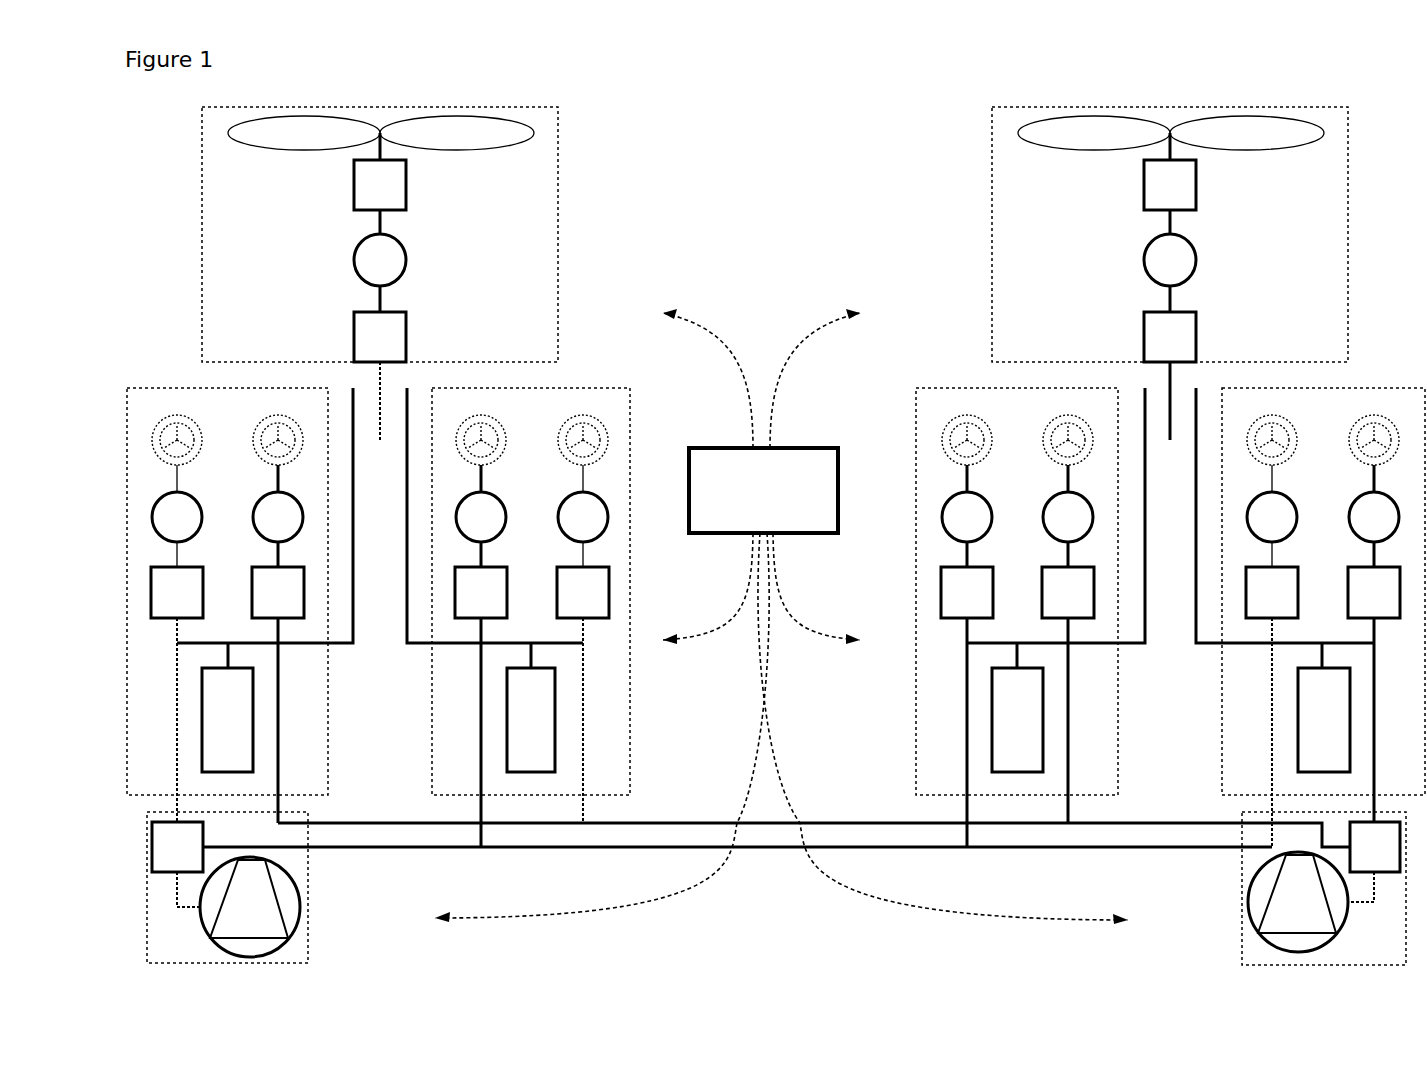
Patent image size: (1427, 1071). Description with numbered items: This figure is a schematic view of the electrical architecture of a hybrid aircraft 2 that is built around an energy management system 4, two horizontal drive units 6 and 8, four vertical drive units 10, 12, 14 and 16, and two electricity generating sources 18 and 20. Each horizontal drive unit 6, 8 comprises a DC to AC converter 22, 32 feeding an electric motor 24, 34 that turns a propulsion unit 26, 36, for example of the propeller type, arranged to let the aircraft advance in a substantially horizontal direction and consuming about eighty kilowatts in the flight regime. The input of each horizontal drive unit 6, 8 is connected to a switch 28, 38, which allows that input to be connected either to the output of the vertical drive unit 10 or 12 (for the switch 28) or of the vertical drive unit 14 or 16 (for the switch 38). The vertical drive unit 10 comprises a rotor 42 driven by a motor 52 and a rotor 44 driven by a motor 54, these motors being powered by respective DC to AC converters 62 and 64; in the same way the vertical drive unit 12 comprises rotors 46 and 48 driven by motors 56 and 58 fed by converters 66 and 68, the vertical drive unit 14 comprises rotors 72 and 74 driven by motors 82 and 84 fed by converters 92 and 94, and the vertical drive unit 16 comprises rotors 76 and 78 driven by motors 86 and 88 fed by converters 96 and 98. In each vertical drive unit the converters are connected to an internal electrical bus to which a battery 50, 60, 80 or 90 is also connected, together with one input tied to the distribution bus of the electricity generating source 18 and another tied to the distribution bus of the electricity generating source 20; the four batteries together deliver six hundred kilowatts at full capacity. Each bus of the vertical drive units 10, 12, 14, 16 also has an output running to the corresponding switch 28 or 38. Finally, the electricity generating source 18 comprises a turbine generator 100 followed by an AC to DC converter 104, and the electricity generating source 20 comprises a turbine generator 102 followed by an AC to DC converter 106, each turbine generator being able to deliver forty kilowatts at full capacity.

The aircraft 2 is at (765, 308).
The energy management system 4 is at (763, 490).
The horizontal drive unit 6 is at (558, 236).
The horizontal drive unit 8 is at (992, 232).
The vertical drive unit 10 is at (328, 745).
The vertical drive unit 12 is at (432, 690).
The vertical drive unit 14 is at (1118, 745).
The vertical drive unit 16 is at (1222, 690).
The electricity generating source 18 is at (312, 897).
The electricity generating source 20 is at (1247, 895).
The DC to AC converter 22 is at (380, 337).
The electric motor 24 is at (380, 260).
The propulsion unit 26 is at (380, 185).
The switch 28 is at (379, 416).
The DC to AC converter 32 is at (1170, 337).
The electric motor 34 is at (1170, 260).
The propulsion unit 36 is at (1170, 185).
The switch 38 is at (1171, 416).
The rotor 42 is at (177, 428).
The rotor 44 is at (278, 428).
The rotor 46 is at (481, 428).
The rotor 48 is at (583, 428).
The battery 50 is at (227, 707).
The motor 52 is at (177, 517).
The motor 54 is at (278, 517).
The motor 56 is at (481, 517).
The motor 58 is at (583, 517).
The battery 60 is at (531, 707).
The DC to AC converter 62 is at (177, 592).
The DC to AC converter 64 is at (278, 592).
The DC to AC converter 66 is at (481, 592).
The DC to AC converter 68 is at (583, 592).
The rotor 72 is at (967, 428).
The rotor 74 is at (1068, 428).
The rotor 76 is at (1272, 428).
The rotor 78 is at (1374, 428).
The battery 80 is at (1017, 707).
The motor 82 is at (967, 517).
The motor 84 is at (1068, 517).
The motor 86 is at (1272, 517).
The motor 88 is at (1374, 517).
The battery 90 is at (1324, 707).
The DC to AC converter 92 is at (967, 592).
The DC to AC converter 94 is at (1068, 592).
The DC to AC converter 96 is at (1272, 592).
The DC to AC converter 98 is at (1374, 592).
The turbine generator 100 is at (250, 907).
The turbine generator 102 is at (1298, 902).
The AC to DC converter 104 is at (177, 847).
The AC to DC converter 106 is at (1375, 847).